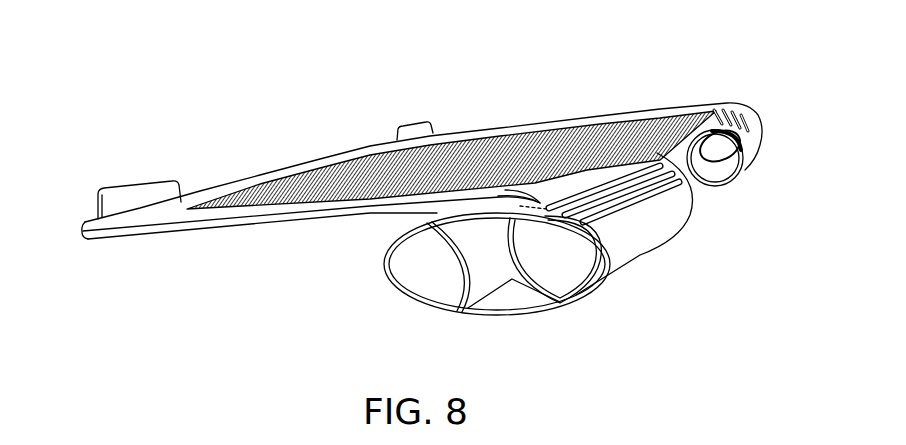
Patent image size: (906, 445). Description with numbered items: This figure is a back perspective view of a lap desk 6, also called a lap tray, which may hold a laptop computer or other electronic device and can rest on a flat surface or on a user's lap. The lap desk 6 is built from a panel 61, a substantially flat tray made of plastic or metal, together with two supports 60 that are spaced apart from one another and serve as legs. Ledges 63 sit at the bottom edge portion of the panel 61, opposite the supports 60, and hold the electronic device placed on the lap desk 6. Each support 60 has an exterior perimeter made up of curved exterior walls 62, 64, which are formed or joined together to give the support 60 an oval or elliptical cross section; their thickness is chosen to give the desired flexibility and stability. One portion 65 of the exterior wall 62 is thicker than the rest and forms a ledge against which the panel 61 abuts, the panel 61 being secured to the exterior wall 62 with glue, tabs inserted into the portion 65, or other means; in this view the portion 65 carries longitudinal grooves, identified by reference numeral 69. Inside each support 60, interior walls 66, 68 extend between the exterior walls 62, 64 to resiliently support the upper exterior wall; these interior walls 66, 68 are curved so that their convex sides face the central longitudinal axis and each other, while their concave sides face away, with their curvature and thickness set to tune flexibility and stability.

The lap desk 6 is at (439, 202).
The support 60 is at (752, 191).
The panel 61 is at (340, 188).
The exterior wall 62 is at (641, 255).
The ledge 63 is at (148, 198).
The exterior wall 64 is at (578, 293).
The portion 65 is at (541, 196).
The interior wall 66 is at (527, 290).
The interior wall 68 is at (460, 283).
The fins 69 is at (630, 190).